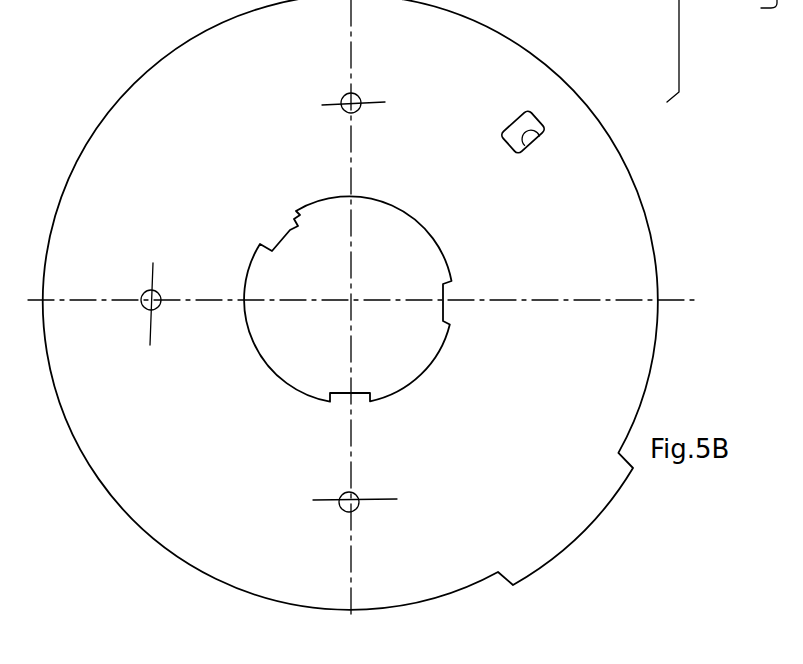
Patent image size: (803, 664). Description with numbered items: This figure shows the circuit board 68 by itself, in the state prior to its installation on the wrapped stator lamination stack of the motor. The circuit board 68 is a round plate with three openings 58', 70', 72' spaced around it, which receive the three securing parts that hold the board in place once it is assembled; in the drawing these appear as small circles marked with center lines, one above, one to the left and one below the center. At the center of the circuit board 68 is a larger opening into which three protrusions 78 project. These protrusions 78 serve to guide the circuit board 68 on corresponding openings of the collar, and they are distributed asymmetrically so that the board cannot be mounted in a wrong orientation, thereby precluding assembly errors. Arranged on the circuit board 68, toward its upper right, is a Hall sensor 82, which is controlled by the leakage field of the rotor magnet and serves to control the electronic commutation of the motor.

The circuit board 68 is at (637, 263).
The protrusions 78 is at (457, 307).
The opening 72' is at (394, 88).
The opening 70' is at (174, 269).
The opening 58' is at (390, 479).
The Hall sensor 82 is at (540, 136).